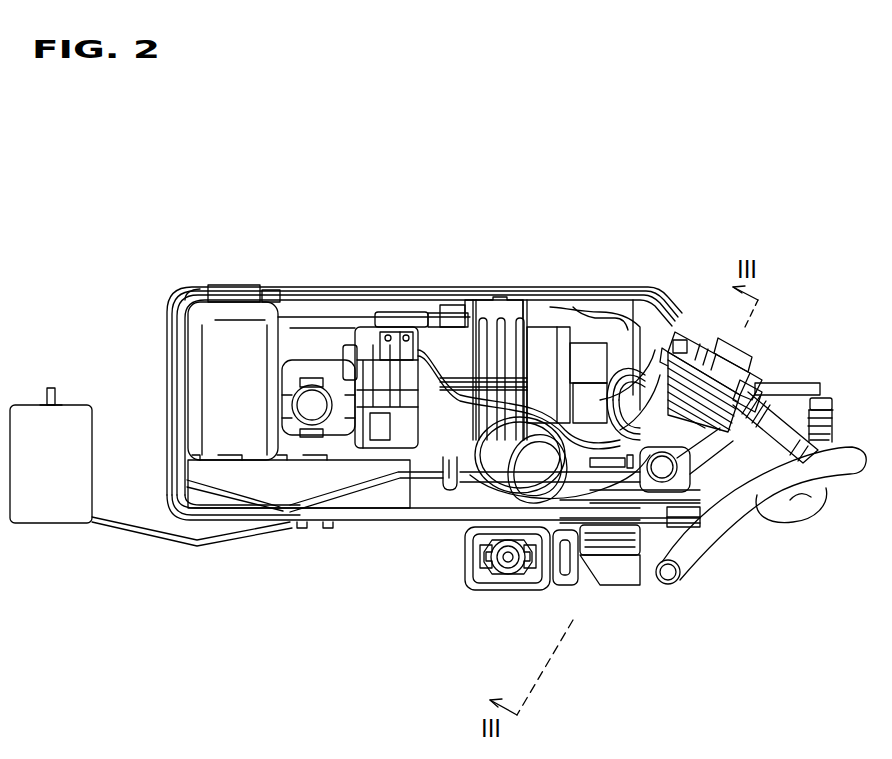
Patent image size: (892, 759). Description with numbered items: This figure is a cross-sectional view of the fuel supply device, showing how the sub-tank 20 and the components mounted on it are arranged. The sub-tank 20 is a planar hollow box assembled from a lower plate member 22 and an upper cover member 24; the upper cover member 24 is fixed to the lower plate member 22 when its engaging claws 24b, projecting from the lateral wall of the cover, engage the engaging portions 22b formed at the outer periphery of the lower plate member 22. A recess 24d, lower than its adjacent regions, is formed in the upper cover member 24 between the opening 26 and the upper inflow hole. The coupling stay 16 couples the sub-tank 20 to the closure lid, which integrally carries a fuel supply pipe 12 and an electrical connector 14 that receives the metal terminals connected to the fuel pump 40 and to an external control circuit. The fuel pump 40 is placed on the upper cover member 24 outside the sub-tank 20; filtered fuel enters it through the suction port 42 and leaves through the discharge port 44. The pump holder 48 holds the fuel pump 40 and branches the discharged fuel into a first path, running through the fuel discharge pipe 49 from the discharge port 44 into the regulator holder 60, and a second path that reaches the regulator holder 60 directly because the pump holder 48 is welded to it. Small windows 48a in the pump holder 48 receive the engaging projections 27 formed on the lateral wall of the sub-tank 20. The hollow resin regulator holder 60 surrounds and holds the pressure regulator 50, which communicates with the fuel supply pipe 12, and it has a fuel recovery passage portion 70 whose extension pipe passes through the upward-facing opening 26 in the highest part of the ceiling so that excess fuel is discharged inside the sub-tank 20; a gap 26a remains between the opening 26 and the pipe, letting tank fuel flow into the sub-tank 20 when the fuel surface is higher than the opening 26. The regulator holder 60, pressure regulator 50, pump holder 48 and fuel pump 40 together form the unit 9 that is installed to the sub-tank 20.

The unit 9 is at (690, 232).
The fuel supply pipe 12 is at (710, 548).
The electrical connector 14 is at (535, 578).
The coupling stay 16 is at (485, 591).
The sub-tank 20 is at (98, 318).
The lower plate member 22 is at (167, 342).
The engaging portions 22b is at (200, 288).
The upper cover member 24 is at (215, 395).
The engaging claws 24b is at (233, 292).
The recess 24d is at (312, 335).
The opening 26 is at (643, 565).
The gap 26a is at (620, 532).
The engaging projections 27 is at (498, 318).
The fuel pump 40 is at (596, 330).
The suction port 42 is at (340, 405).
The discharge port 44 is at (545, 340).
The pump holder 48 is at (552, 347).
The small windows 48a is at (475, 320).
The fuel discharge pipe 49 is at (830, 505).
The pressure regulator 50 is at (725, 333).
The regulator holder 60 is at (641, 385).
The fuel recovery passage portion 70 is at (676, 558).